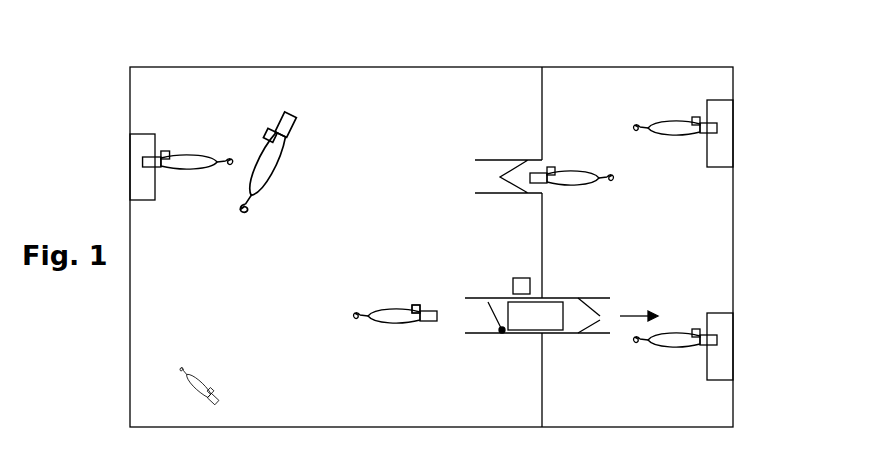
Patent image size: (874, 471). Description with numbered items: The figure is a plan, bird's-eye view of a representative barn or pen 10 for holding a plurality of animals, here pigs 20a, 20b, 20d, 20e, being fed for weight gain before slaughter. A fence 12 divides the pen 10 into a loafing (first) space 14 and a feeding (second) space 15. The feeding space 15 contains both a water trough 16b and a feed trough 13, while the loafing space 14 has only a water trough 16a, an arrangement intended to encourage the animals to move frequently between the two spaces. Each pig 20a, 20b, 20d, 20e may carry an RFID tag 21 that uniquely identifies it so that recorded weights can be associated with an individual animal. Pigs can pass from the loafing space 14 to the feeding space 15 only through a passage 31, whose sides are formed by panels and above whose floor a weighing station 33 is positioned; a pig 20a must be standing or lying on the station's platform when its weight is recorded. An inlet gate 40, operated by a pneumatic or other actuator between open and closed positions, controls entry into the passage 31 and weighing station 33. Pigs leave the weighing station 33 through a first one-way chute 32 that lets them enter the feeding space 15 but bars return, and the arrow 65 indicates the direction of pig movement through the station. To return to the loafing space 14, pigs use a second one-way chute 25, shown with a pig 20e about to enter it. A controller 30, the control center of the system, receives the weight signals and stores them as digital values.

The pen 10 is at (590, 35).
The fence 12 is at (542, 370).
The feed trough 13 is at (728, 125).
The loafing space 14 is at (377, 189).
The feeding space 15 is at (692, 262).
The water trough 16a is at (140, 156).
The water trough 16b is at (735, 332).
The pig 20a is at (380, 310).
The pig 20b is at (672, 138).
The pig 20d is at (203, 157).
The pig 20e is at (568, 168).
The RFID tag 21 is at (417, 305).
The second one-way chute 25 is at (504, 162).
The controller 30 is at (513, 282).
The passage 31 is at (593, 298).
The first one-way chute 32 is at (598, 322).
The weighing station 33 is at (520, 327).
The inlet gate 40 is at (493, 317).
The arrow 65 is at (652, 310).